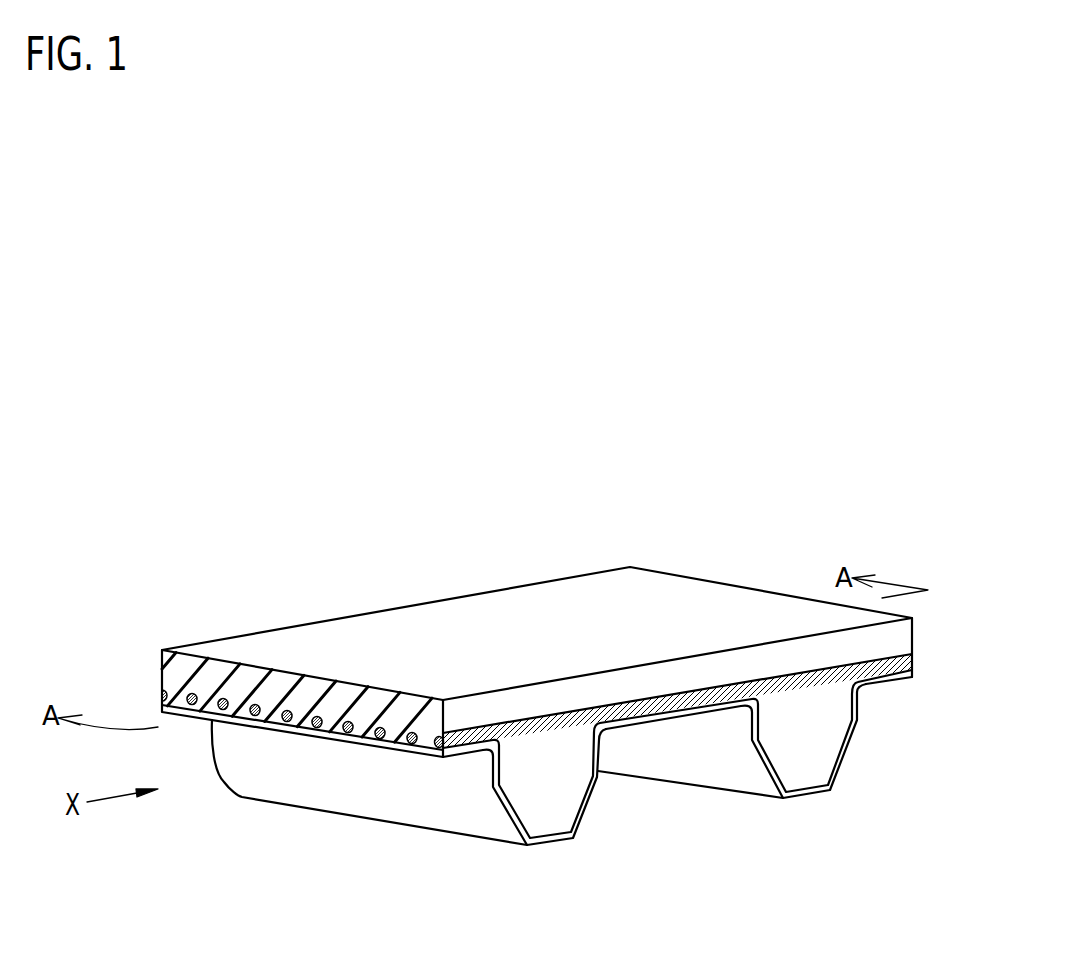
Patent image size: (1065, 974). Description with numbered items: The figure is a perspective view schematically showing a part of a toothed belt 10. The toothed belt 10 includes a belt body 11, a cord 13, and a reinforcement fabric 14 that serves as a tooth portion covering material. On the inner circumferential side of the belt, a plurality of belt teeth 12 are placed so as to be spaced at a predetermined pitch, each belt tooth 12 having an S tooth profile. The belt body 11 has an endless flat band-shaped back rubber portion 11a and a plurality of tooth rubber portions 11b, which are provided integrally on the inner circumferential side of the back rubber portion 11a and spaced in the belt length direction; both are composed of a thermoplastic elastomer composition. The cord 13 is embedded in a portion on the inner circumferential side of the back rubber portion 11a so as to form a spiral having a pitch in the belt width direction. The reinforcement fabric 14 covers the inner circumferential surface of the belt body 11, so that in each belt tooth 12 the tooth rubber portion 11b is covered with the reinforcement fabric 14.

The toothed belt 10 is at (552, 706).
The belt body 11 is at (552, 686).
The back rubber portion 11a is at (740, 667).
The tooth rubber portions 11b is at (818, 765).
The belt teeth 12 is at (557, 873).
The cord 13 is at (242, 723).
The reinforcement fabric 14 is at (857, 750).